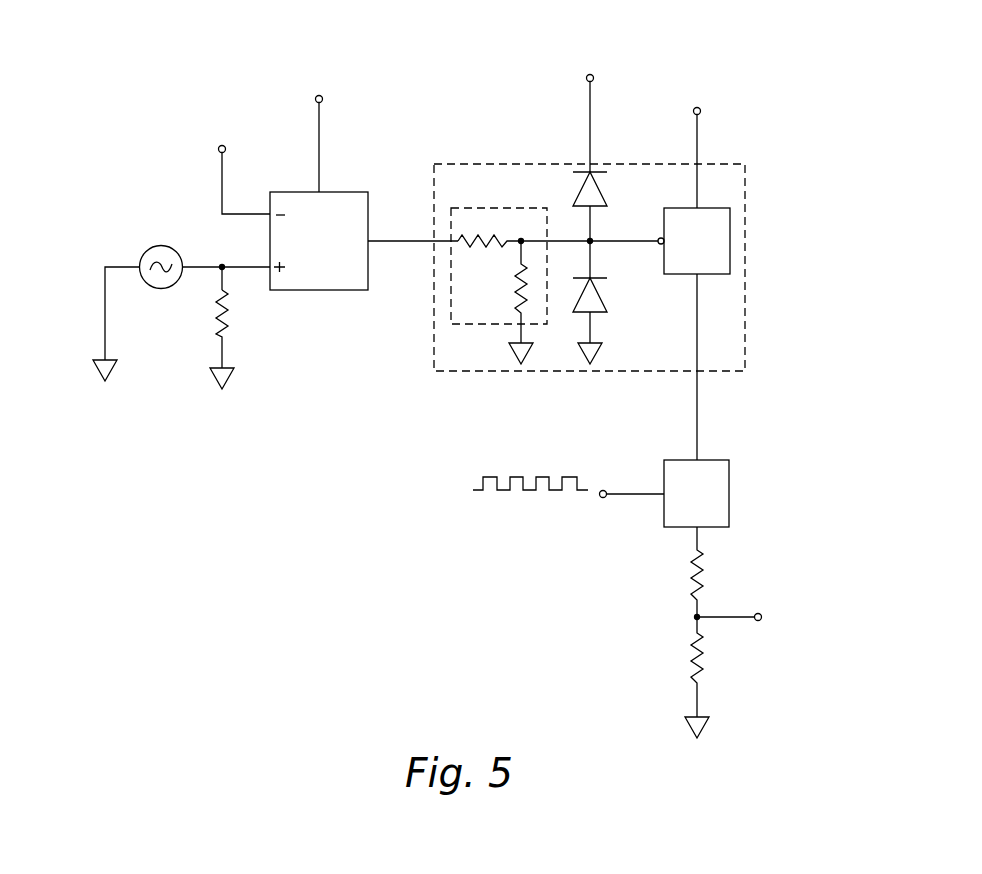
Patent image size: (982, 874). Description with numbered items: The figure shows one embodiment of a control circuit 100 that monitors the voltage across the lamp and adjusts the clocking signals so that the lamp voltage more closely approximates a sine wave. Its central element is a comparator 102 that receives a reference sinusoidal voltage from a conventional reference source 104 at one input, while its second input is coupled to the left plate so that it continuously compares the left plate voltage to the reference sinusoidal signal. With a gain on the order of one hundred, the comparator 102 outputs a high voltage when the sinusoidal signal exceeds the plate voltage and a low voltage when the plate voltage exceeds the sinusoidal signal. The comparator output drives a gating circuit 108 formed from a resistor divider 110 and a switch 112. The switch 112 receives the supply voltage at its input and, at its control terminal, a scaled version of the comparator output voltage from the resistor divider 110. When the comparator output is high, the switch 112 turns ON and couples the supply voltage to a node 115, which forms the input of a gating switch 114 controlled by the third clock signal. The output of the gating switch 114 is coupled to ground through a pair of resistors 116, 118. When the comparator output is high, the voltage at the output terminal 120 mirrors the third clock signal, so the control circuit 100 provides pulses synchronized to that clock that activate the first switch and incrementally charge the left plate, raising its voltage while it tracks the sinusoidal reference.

The control circuit 100 is at (787, 126).
The comparator 102 is at (352, 192).
The reference source 104 is at (153, 247).
The gating circuit 108 is at (745, 265).
The resistor divider 110 is at (497, 208).
The switch 112 is at (682, 274).
The gating switch 114 is at (729, 505).
The node 115 is at (698, 420).
The resistor 116 is at (690, 577).
The resistor 118 is at (690, 663).
The output terminal 120 is at (737, 618).